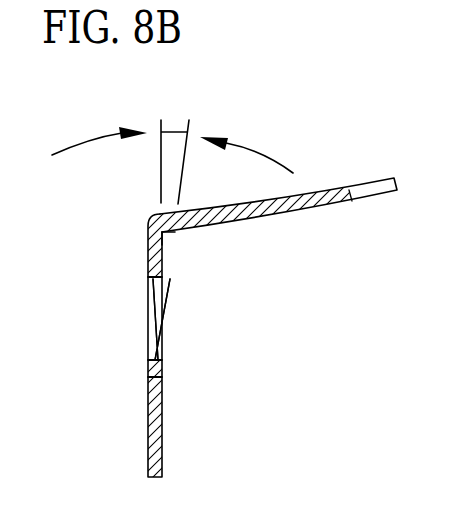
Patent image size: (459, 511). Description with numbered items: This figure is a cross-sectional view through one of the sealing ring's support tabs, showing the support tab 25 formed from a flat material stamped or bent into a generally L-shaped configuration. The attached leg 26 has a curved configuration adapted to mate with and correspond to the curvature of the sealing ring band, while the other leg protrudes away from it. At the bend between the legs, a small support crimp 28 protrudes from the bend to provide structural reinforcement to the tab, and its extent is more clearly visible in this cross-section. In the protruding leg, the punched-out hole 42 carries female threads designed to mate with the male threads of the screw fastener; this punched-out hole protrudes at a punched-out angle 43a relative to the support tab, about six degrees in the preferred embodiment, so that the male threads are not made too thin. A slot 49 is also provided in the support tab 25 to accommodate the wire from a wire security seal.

The support tab 25 is at (162, 400).
The attached leg 26 is at (317, 194).
The support crimp 28 is at (165, 237).
The punched-out angle 43a is at (176, 131).
The punched-out hole 42 is at (165, 328).
The slot 49 is at (148, 375).